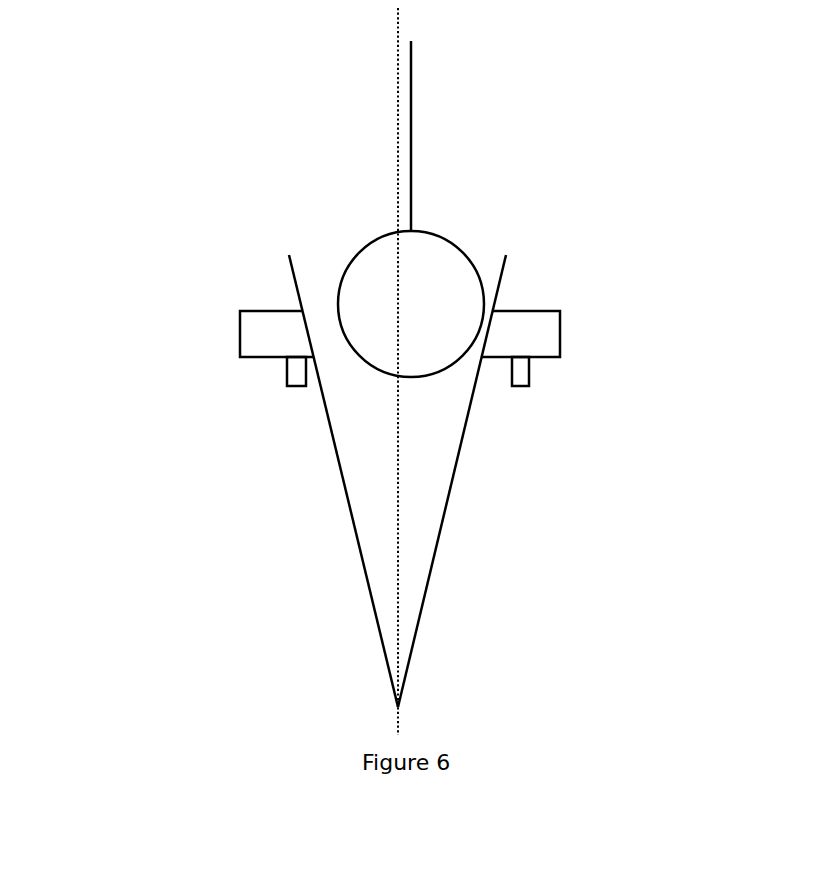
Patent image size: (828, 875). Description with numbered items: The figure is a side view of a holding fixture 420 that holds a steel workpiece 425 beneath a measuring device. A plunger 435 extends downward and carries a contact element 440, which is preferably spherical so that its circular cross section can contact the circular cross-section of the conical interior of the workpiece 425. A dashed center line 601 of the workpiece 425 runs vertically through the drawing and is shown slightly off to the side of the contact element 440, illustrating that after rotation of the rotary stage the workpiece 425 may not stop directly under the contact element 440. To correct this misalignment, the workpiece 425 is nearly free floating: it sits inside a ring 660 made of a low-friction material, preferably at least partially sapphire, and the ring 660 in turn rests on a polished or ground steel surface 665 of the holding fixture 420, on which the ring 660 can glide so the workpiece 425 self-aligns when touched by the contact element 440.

The holding fixture 420 is at (197, 199).
The workpiece 425 is at (330, 448).
The plunger 435 is at (403, 99).
The contact element 440 is at (424, 283).
The center line 601 is at (389, 69).
The ring 660 is at (552, 317).
The surface 665 is at (522, 359).